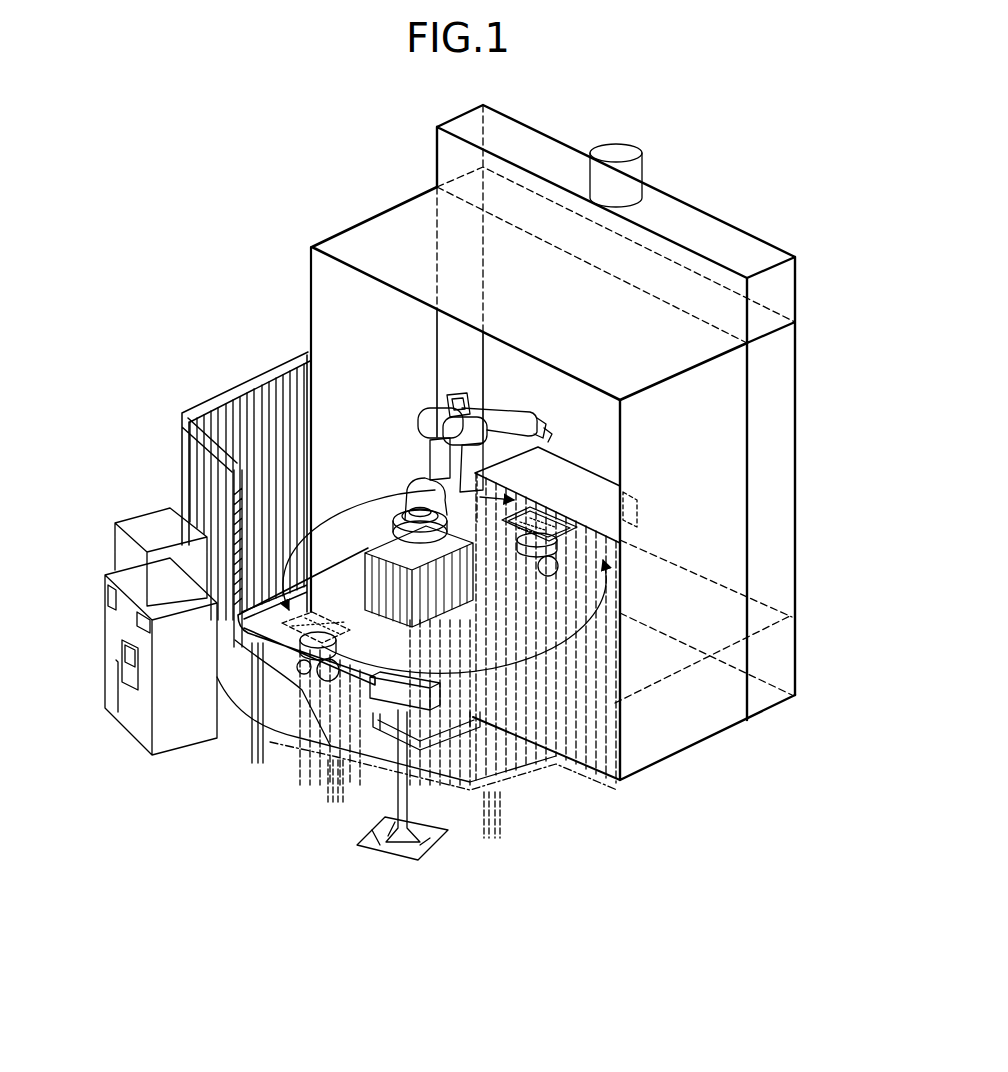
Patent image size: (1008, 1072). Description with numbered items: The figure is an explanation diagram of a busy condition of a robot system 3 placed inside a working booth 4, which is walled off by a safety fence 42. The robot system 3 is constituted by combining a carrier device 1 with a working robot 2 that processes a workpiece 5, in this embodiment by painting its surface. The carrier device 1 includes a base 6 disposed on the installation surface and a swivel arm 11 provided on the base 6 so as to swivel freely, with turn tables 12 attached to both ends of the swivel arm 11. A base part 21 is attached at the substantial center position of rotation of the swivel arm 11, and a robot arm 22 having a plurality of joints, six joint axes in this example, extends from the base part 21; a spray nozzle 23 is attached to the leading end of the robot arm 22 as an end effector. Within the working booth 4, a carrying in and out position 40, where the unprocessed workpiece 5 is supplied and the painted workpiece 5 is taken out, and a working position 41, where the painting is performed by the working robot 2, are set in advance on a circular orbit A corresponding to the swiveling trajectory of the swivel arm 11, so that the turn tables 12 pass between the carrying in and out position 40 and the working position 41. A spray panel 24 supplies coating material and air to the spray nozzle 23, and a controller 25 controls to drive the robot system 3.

The carrier device 1 is at (507, 690).
The working robot 2 is at (533, 392).
The robot system 3 is at (341, 464).
The working booth 4 is at (318, 228).
The workpiece 5 is at (580, 518).
The base 6 is at (473, 712).
The swivel arm 11 is at (374, 667).
The turn tables 12 is at (292, 668).
The base part 21 is at (392, 518).
The robot arm 22 is at (489, 395).
The spray nozzle 23 is at (541, 424).
The spray panel 24 is at (115, 540).
The controller 25 is at (100, 656).
The carrying in and out position 40 is at (283, 645).
The working position 41 is at (562, 483).
The safety fence 42 is at (217, 397).
The circular orbit A is at (604, 585).